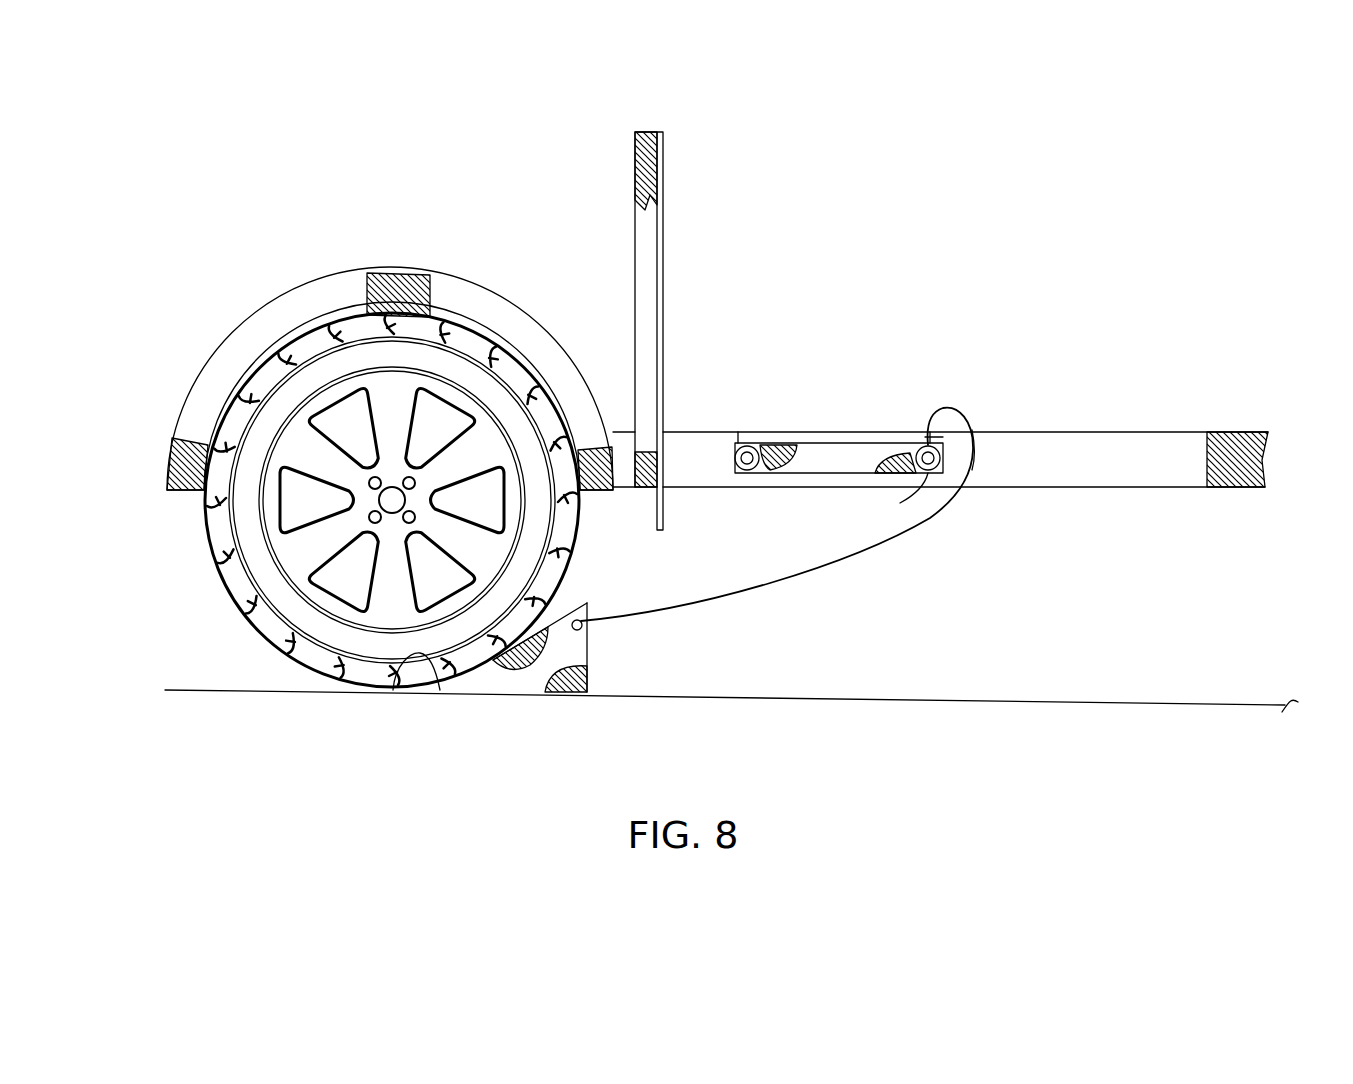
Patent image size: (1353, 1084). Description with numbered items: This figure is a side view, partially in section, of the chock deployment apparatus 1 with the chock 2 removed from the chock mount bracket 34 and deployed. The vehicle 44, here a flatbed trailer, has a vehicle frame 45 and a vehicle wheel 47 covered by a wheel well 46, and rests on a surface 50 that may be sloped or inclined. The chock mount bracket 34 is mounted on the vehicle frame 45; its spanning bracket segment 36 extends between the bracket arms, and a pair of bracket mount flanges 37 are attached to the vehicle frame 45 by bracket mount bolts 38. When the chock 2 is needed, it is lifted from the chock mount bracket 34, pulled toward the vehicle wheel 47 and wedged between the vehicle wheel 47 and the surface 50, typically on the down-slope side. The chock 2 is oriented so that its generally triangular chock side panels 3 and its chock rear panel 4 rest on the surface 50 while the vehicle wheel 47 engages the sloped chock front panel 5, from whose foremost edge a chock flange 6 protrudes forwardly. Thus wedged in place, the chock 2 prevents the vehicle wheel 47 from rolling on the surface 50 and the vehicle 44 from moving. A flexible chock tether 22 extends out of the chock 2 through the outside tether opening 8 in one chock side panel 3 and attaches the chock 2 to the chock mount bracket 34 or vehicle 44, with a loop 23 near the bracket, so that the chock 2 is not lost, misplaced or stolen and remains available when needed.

The chock deployment apparatus 1 is at (895, 589).
The chock 2 is at (577, 656).
The chock side panel 3 is at (503, 688).
The chock rear panel 4 is at (590, 682).
The chock front panel 5 is at (553, 627).
The chock flange 6 is at (405, 690).
The outside tether opening 8 is at (583, 620).
The chock tether 22 is at (933, 517).
The strap loop 23 is at (972, 430).
The chock mount bracket 34 is at (872, 440).
The spanning bracket segment 36 is at (850, 448).
The bracket mount flange 37 is at (737, 445).
The bracket mount bolt 38 is at (758, 472).
The vehicle 44 is at (1167, 487).
The vehicle frame 45 is at (1075, 452).
The wheel well 46 is at (285, 312).
The vehicle wheel 47 is at (258, 578).
The surface 50 is at (1100, 703).